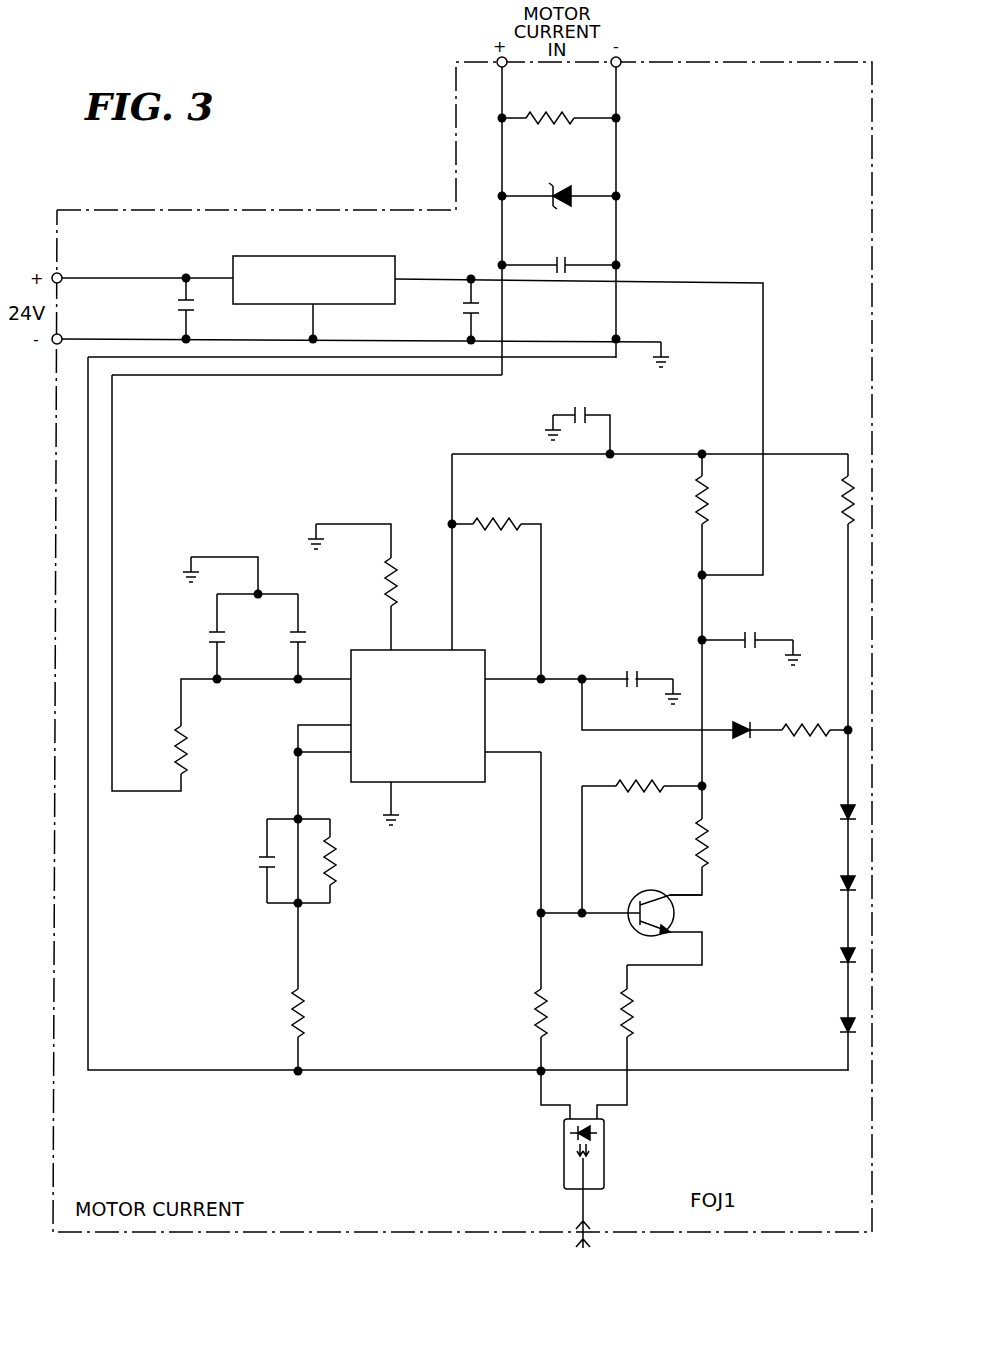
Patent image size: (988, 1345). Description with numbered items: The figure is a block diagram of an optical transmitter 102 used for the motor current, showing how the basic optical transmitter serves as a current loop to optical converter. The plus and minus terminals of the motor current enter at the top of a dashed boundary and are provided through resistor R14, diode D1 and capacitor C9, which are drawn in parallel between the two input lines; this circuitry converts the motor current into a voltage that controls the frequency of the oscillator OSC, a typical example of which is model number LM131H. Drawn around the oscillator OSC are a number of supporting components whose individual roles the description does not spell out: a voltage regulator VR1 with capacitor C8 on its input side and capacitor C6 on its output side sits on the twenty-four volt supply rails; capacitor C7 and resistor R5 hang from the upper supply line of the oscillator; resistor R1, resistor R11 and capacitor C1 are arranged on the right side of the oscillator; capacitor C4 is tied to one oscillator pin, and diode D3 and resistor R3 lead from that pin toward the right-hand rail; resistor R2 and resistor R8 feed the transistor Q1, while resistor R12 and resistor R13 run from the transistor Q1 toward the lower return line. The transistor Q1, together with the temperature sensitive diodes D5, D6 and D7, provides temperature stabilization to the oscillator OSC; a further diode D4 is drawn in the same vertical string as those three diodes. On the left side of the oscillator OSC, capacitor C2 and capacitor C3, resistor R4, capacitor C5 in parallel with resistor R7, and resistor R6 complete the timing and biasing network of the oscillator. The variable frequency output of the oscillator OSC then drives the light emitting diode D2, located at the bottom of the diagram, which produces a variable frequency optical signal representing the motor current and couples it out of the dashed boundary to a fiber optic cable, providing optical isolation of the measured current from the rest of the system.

The optical transmitter 102 is at (452, 182).
The resistor R14 is at (559, 103).
The diode D1 is at (559, 185).
The capacitor C9 is at (559, 252).
The voltage regulator VR1 is at (313, 297).
The capacitor C8 is at (167, 309).
The capacitor C6 is at (454, 310).
The capacitor C7 is at (577, 417).
The resistor R5 is at (496, 582).
The resistor R1 is at (718, 500).
The resistor R11 is at (822, 500).
The capacitor C1 is at (751, 633).
The capacitor C4 is at (631, 661).
The diode D3 is at (734, 715).
The resistor R3 is at (806, 714).
The resistor R2 is at (642, 771).
The resistor R8 is at (717, 843).
The transistor Q1 is at (626, 927).
The resistor R12 is at (518, 1013).
The resistor R13 is at (650, 1013).
The diode D4 is at (820, 808).
The temperature sensitive diode D5 is at (820, 881).
The temperature sensitive diode D6 is at (824, 953).
The temperature sensitive diode D7 is at (820, 1023).
The light emitting diode D2 is at (607, 1183).
The oscillator OSC is at (415, 713).
The capacitor C2 is at (197, 636).
The capacitor C3 is at (312, 636).
The resistor R4 is at (368, 582).
The capacitor C5 is at (258, 861).
The resistor R7 is at (335, 861).
The resistor R6 is at (275, 1013).